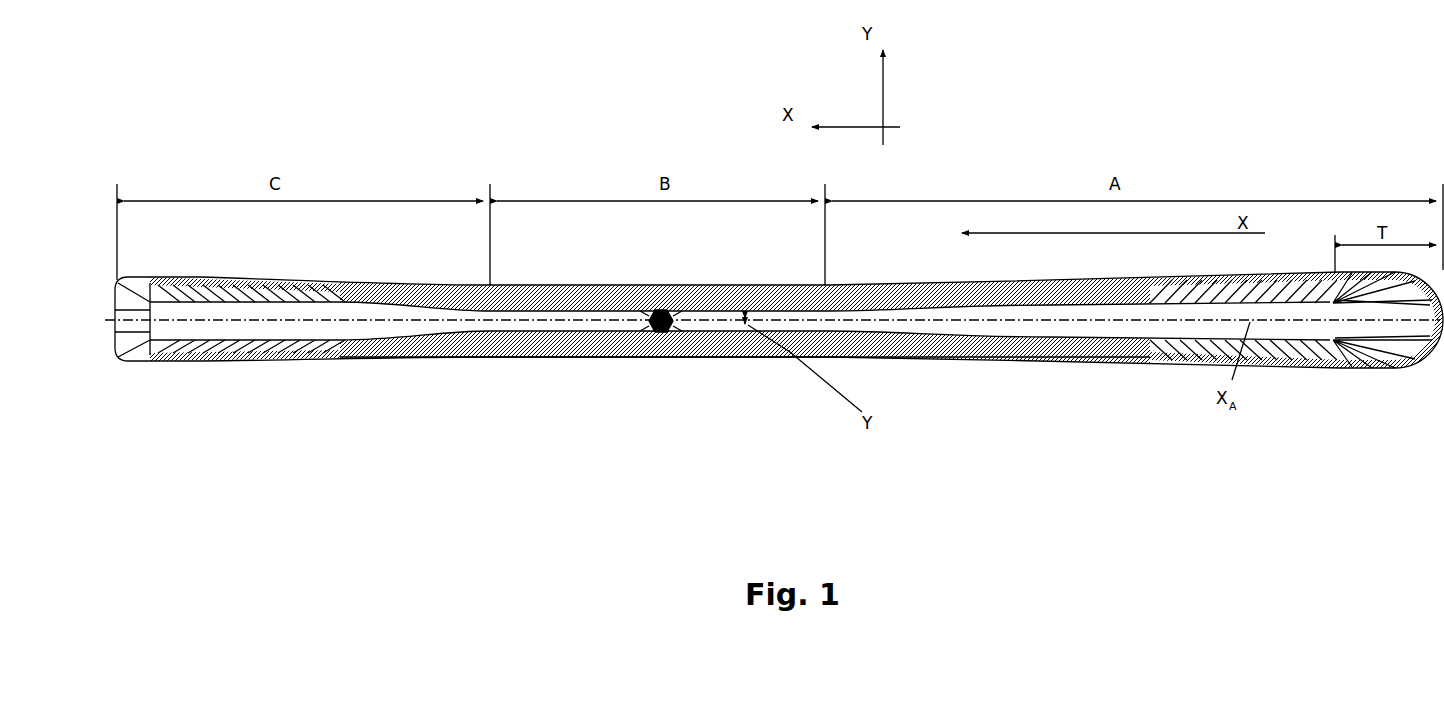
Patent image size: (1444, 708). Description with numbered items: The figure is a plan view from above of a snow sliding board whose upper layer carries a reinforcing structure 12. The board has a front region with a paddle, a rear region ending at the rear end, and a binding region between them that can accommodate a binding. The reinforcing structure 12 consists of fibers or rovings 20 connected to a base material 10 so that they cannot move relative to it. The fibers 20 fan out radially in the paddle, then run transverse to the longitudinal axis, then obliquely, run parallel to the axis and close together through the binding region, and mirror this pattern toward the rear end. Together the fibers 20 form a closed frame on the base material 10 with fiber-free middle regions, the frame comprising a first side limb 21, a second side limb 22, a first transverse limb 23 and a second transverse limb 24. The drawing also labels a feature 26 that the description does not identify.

The base material 10 is at (1020, 318).
The reinforcing structure 12 is at (570, 357).
The fibers and/or rovings 20 is at (652, 333).
The first side limb 21 is at (325, 310).
The second side limb 22 is at (258, 355).
The first transverse limb 23 is at (1358, 322).
The second transverse limb 24 is at (122, 360).
The fiber layer 26 is at (380, 287).